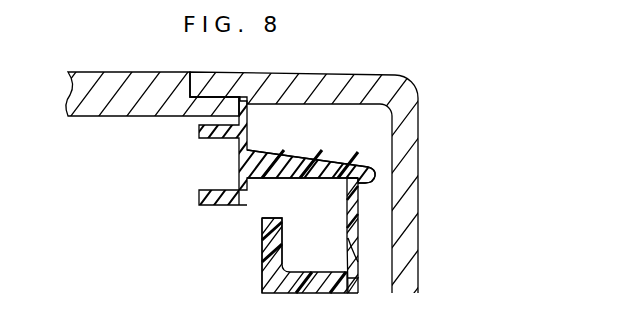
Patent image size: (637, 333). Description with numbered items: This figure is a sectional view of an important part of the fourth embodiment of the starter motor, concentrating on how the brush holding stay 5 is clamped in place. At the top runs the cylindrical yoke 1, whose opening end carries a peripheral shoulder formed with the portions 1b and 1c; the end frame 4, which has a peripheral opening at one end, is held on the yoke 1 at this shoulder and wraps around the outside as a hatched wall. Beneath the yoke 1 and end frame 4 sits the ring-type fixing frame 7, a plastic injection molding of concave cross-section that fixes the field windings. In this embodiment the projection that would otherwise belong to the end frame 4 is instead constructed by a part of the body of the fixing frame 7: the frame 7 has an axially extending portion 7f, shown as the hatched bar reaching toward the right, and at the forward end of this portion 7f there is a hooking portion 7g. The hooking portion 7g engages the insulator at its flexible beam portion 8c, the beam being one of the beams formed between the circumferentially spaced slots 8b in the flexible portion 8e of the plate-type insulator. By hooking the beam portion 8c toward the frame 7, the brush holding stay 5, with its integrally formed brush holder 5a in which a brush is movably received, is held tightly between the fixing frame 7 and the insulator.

The yoke 1 is at (100, 93).
The peripheral shoulder portion 1b is at (233, 102).
The peripheral shoulder portion 1c is at (188, 97).
The end frame 4 is at (350, 88).
The fixing frame 7 is at (232, 134).
The axially extending portion 7f is at (285, 172).
The hooking portion 7g is at (378, 172).
The slot 8b is at (353, 257).
The beam portion 8c is at (355, 203).
The flexible portion 8e is at (357, 278).
The brush holding stay 5 is at (333, 294).
The brush holder 5a is at (272, 260).